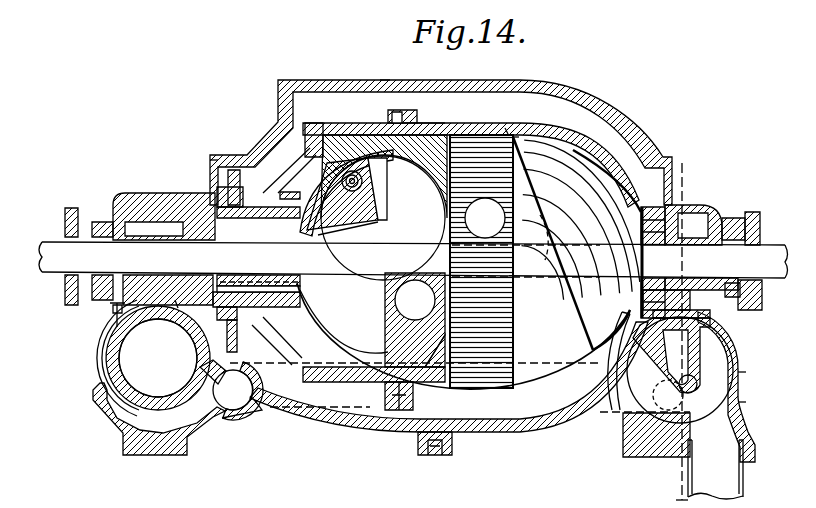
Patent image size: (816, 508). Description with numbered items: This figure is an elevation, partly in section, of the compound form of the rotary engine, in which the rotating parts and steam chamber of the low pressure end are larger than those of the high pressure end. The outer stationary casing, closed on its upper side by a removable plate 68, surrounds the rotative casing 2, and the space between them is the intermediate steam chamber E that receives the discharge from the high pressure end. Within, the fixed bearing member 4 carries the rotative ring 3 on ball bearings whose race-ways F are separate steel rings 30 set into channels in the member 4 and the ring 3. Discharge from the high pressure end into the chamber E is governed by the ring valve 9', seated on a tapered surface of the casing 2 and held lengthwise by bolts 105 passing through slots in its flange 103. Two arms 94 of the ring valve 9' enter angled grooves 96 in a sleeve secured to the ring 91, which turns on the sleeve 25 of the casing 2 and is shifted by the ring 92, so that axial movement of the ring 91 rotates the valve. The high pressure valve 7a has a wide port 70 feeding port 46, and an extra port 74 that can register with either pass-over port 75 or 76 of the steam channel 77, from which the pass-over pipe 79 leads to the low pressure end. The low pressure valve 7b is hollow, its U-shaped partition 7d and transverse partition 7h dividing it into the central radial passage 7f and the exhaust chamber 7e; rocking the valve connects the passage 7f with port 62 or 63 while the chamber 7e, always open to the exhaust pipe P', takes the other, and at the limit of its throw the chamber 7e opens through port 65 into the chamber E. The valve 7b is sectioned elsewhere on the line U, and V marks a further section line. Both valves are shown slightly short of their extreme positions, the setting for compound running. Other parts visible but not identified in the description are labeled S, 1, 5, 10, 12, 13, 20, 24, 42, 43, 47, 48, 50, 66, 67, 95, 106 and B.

The shaft S is at (413, 260).
The intermediate steam chamber E is at (578, 116).
The removable plate 68 is at (383, 81).
The fixed bearing member 4 is at (612, 153).
The flange 103 is at (392, 106).
The bolts 105 is at (392, 118).
The cover plate 106 is at (422, 122).
The ring valve 9' is at (327, 131).
The rotative casing 2 is at (506, 130).
The cam chamber 5 is at (435, 248).
The ball race-ways F is at (368, 183).
The wedge block 50 is at (385, 200).
The lever 24 is at (350, 208).
The sleeve 25 is at (240, 200).
The ring 92 is at (212, 169).
The ring 91 is at (216, 206).
The arms 94 is at (273, 185).
The pawl pin 95 is at (290, 192).
The bearing housing 67 is at (122, 232).
The bearing 48 is at (150, 232).
The flange 47 is at (114, 305).
The grooves 96 is at (252, 283).
The clutch block 12 is at (388, 318).
The brake band B is at (463, 346).
The block 13 is at (450, 362).
The rotative ring 3 is at (496, 243).
The steel rings 30 is at (536, 212).
The disc 1 is at (366, 335).
The axis line 10 is at (380, 247).
The lower casing 20 is at (524, 414).
The ring gear 42 is at (648, 206).
The hub 43 is at (655, 298).
The bearing cap 66 is at (710, 212).
The section line U is at (682, 322).
The section line V is at (680, 502).
The port 62 is at (684, 316).
The port 63 is at (732, 332).
The radial passage 7f is at (666, 336).
The U-shaped partition 7d is at (698, 378).
The exhaust chamber 7e is at (676, 396).
The valve 7b is at (745, 376).
The transverse partition 7h is at (746, 402).
The port 65 is at (622, 418).
The pass-over pipe 79 is at (276, 412).
The exhaust pipe P' is at (727, 469).
The extra port 74 is at (146, 368).
The port 70 is at (170, 306).
The port 46 is at (181, 320).
The valve 7a is at (103, 343).
The pass-over port 75 is at (98, 396).
The pass-over port 76 is at (223, 418).
The steam channel 77 is at (250, 413).